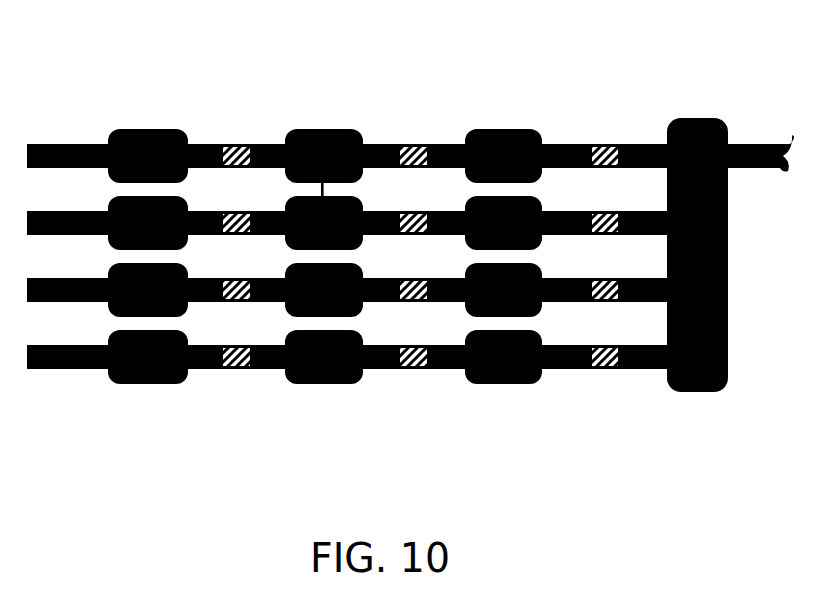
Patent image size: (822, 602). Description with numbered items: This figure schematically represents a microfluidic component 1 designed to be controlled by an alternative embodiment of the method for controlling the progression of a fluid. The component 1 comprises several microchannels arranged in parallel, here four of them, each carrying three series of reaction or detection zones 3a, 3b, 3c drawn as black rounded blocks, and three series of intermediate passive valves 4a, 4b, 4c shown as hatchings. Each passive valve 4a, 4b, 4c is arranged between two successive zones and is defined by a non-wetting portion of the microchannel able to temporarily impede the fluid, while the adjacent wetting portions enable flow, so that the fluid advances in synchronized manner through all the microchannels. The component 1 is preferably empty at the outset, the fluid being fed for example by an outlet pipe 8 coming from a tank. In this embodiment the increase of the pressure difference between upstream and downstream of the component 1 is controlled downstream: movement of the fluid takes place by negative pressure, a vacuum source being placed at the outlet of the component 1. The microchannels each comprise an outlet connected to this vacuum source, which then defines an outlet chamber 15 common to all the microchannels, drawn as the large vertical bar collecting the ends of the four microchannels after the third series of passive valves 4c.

The microfluidic component 1 is at (60, 98).
The first series of reaction or detection zones 3a is at (157, 130).
The second series of reaction or detection zones 3b is at (315, 130).
The third series of reaction or detection zones 3c is at (470, 310).
The first series of passive valves 4a is at (227, 293).
The second series of passive valves 4b is at (420, 278).
The third series of passive valves 4c is at (610, 345).
The outlet pipe 8 is at (758, 145).
The outlet chamber 15 is at (730, 264).